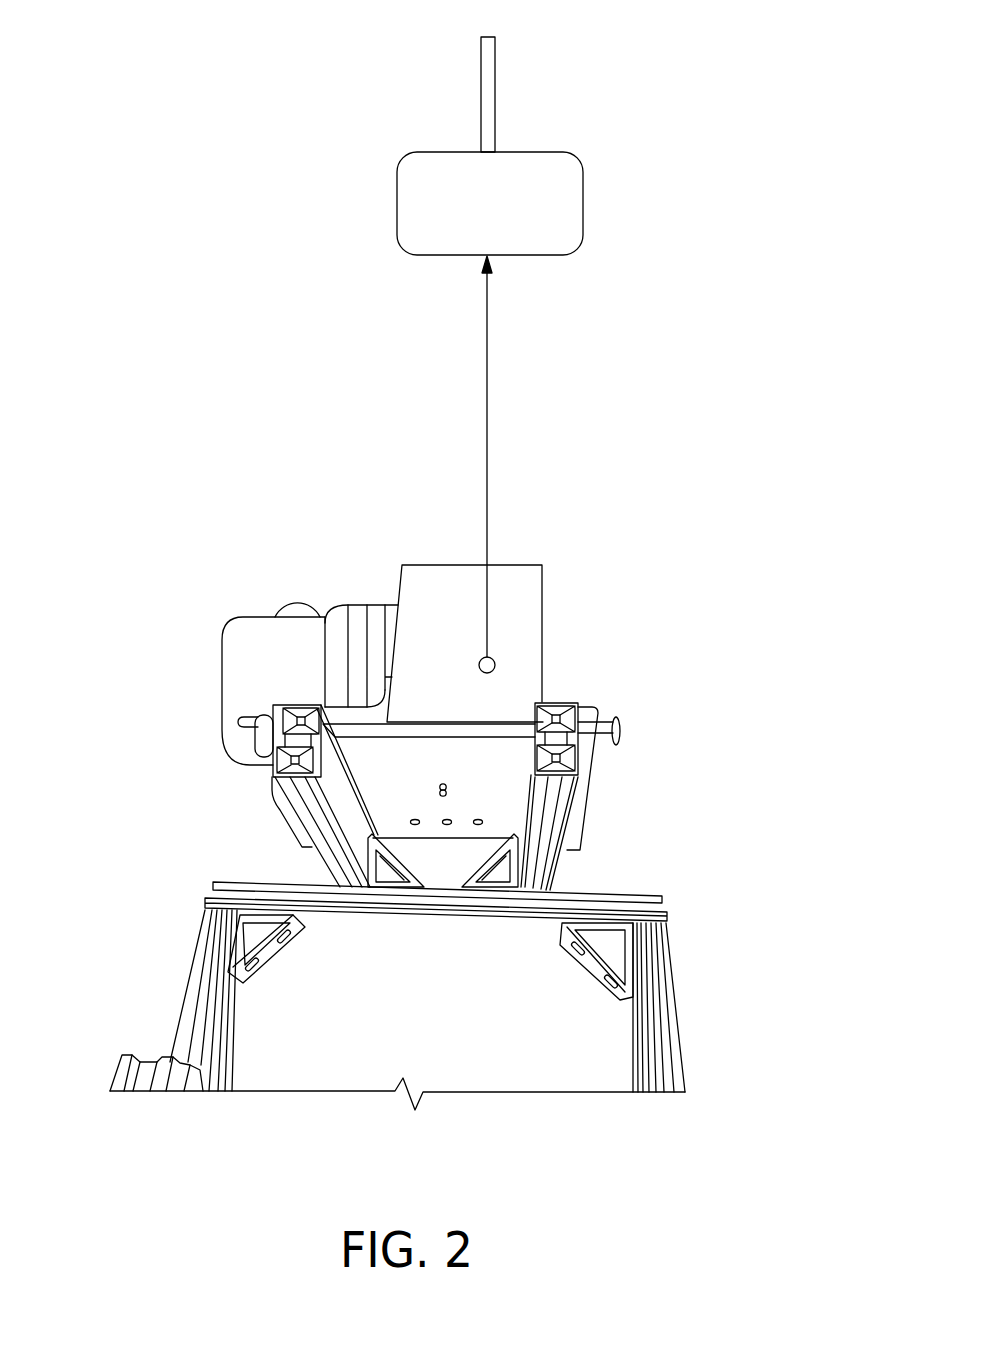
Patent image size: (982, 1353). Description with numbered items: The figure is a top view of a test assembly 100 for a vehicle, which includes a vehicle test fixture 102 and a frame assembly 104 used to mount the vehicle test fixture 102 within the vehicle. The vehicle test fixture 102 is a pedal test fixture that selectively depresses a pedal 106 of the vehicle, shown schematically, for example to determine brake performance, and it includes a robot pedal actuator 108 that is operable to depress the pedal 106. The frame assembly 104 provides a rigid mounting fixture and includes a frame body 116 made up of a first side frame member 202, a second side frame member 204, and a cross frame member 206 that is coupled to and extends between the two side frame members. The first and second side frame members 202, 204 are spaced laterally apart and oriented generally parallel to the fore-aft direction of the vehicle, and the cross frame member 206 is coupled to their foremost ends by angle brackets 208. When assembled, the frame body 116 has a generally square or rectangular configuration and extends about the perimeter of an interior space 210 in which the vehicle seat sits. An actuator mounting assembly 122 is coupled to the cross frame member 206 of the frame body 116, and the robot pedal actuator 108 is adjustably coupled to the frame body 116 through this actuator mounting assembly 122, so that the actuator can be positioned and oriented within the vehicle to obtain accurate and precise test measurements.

The test assembly 100 is at (180, 492).
The vehicle test fixture 102 is at (347, 582).
The frame assembly 104 is at (200, 865).
The pedal 106 is at (512, 219).
The robot pedal actuator 108 is at (218, 620).
The frame body 116 is at (682, 903).
The actuator mounting assembly 122 is at (585, 760).
The first side frame member 202 is at (192, 970).
The second side frame member 204 is at (677, 1025).
The cross frame member 206 is at (638, 896).
The angle brackets 208 is at (272, 967).
The interior space 210 is at (468, 1036).